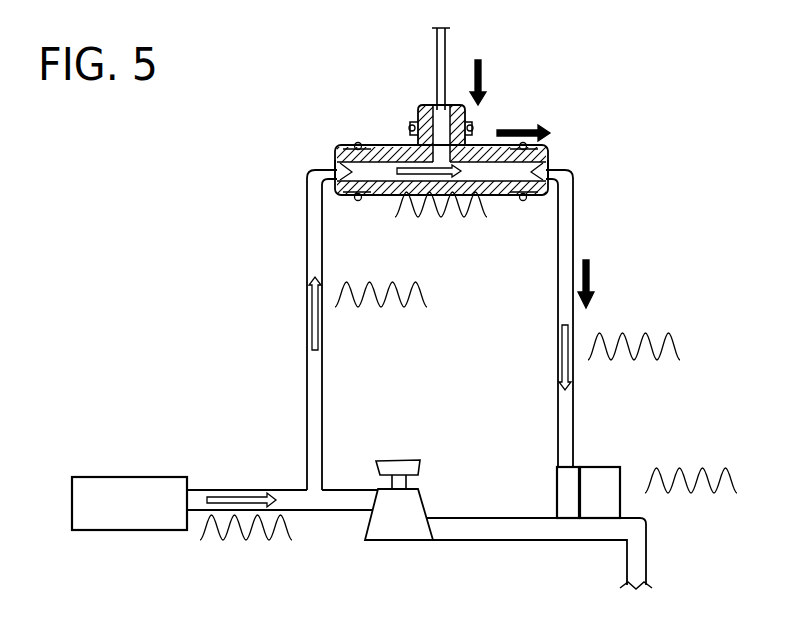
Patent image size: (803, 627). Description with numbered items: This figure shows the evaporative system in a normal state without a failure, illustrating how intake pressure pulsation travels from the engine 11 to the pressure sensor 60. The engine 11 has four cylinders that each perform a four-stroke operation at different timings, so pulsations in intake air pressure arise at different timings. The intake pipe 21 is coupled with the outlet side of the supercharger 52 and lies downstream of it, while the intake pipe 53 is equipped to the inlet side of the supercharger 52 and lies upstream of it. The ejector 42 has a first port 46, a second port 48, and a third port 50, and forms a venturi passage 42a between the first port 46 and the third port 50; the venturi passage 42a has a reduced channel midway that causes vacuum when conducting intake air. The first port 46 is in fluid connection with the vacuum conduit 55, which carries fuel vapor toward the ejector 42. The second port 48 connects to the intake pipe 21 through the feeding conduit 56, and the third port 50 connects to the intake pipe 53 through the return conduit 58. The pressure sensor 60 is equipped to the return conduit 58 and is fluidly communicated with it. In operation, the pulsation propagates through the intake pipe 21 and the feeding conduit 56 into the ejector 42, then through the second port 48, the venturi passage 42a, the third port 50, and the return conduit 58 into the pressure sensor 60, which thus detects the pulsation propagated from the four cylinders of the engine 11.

The engine 11 is at (128, 477).
The intake pipe 21 is at (278, 490).
The ejector 42 is at (396, 90).
The venturi passage 42a is at (350, 172).
The first port 46 is at (440, 118).
The second port 48 is at (337, 170).
The third port 50 is at (550, 172).
The supercharger 52 is at (400, 540).
The intake pipe 53 is at (627, 560).
The vacuum conduit 55 is at (437, 52).
The feeding conduit 56 is at (307, 243).
The return conduit 58 is at (573, 238).
The pressure sensor 60 is at (595, 467).